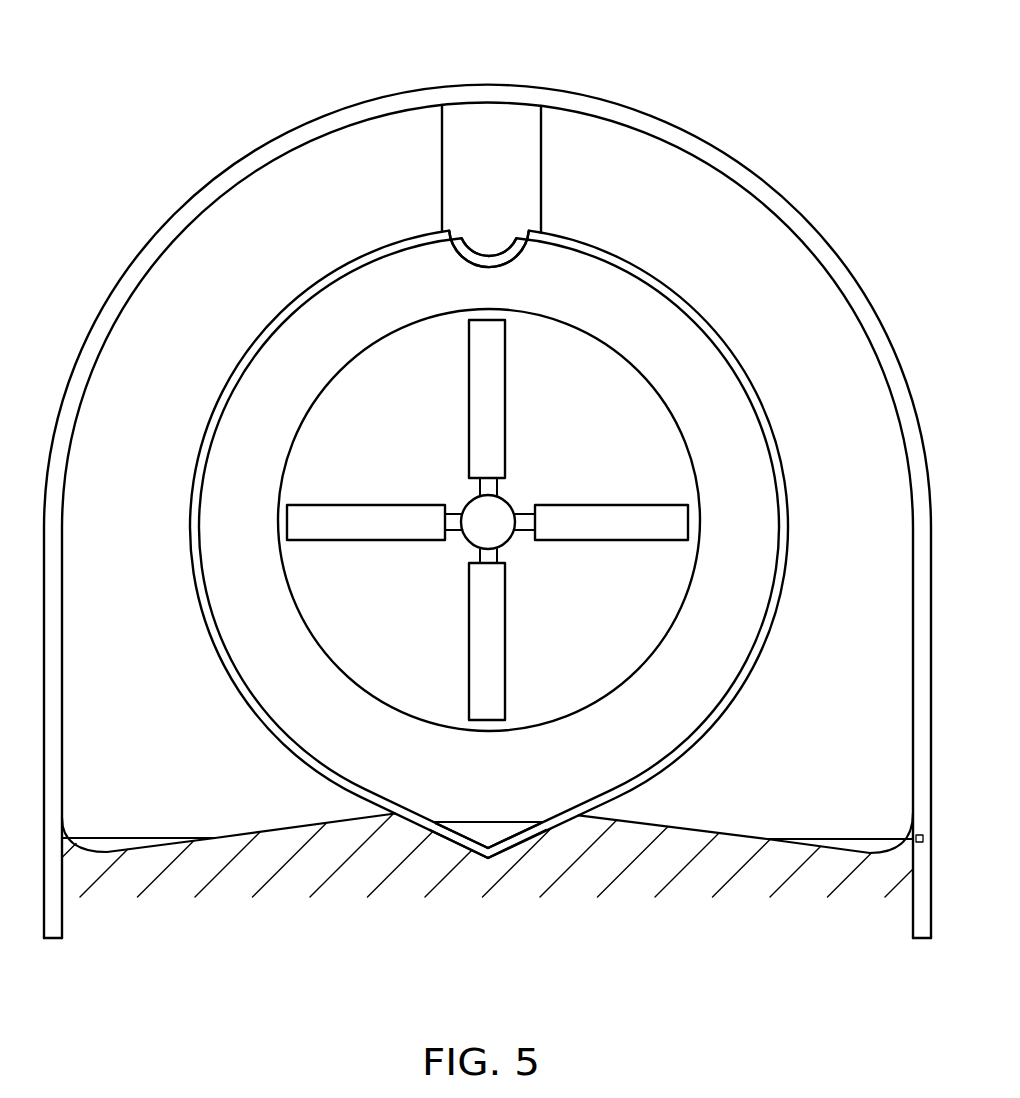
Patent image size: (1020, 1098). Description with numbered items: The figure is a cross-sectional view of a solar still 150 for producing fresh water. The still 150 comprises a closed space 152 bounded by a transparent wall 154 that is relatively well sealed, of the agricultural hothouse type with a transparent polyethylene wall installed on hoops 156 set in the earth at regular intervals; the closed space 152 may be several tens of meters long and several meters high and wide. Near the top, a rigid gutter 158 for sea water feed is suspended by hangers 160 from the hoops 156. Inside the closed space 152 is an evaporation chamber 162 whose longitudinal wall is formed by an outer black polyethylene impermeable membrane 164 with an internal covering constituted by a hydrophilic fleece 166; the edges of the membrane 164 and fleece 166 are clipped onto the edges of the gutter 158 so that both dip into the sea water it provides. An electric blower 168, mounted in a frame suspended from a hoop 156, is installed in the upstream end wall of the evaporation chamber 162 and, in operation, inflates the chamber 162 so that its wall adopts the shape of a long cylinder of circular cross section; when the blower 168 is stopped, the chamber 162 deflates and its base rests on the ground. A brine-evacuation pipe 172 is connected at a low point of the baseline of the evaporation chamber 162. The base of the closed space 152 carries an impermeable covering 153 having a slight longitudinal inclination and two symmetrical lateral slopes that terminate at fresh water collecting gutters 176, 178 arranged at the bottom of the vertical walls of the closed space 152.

The solar still 150 is at (157, 103).
The closed space 152 is at (747, 145).
The impermeable covering 153 is at (328, 825).
The transparent wall 154 is at (817, 225).
The hoops 156 is at (917, 843).
The rigid gutter 158 is at (492, 238).
The hangers 160 is at (542, 140).
The evaporation chamber 162 is at (281, 444).
The outer black polyethylene impermeable membrane 164 is at (777, 616).
The hydrophilic fleece 166 is at (780, 553).
The electric blower 168 is at (502, 653).
The brine-evacuation pipe 172 is at (488, 846).
The fresh water collecting gutter 176 is at (127, 836).
The fresh water collecting gutter 178 is at (850, 837).